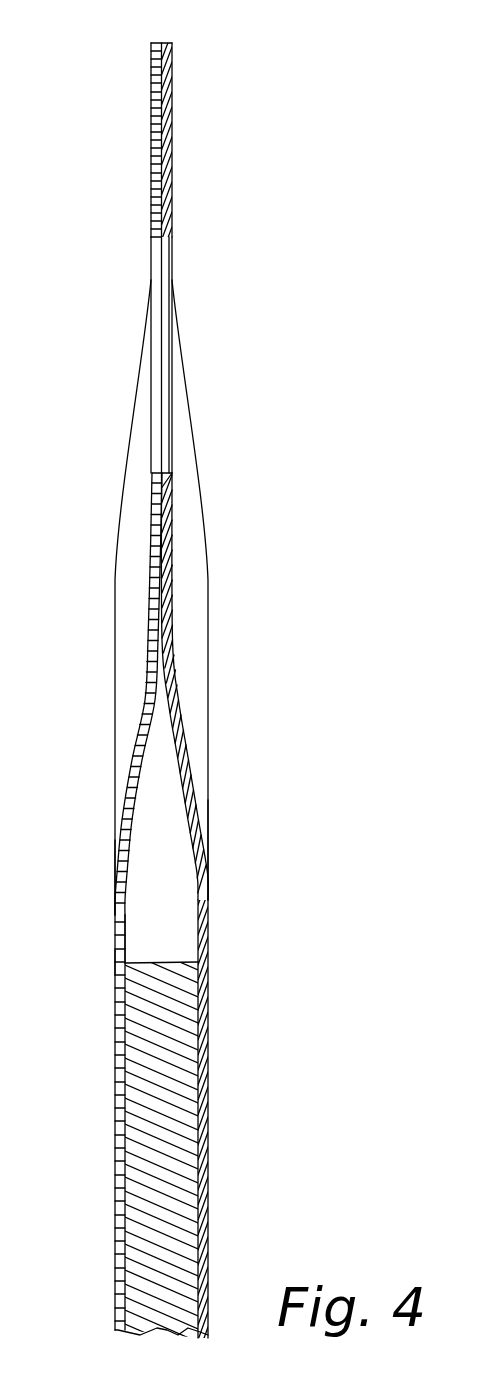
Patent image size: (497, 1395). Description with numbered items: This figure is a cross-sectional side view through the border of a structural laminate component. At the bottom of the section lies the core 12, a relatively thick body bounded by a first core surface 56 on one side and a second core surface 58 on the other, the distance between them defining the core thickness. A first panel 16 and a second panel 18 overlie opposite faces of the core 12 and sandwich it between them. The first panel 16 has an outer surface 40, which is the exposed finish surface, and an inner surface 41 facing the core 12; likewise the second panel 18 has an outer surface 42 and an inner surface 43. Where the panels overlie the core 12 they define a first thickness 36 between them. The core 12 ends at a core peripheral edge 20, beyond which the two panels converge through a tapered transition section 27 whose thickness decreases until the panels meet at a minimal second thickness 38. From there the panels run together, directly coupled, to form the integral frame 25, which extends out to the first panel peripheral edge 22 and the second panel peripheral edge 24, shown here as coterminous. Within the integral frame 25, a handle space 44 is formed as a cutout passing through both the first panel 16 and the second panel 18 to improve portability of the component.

The core 12 is at (158, 1162).
The first panel 16 is at (138, 768).
The second panel 18 is at (184, 760).
The core peripheral edge 20 is at (127, 963).
The first panel peripheral edge 22 is at (158, 43).
The second panel peripheral edge 24 is at (168, 43).
The integral frame 25 is at (156, 145).
The transition section 27 is at (190, 462).
The first thickness 36 is at (190, 963).
The second thickness 38 is at (154, 648).
The outer surface of first panel 40 is at (116, 853).
The inner surface of first panel 41 is at (127, 916).
The outer surface of second panel 42 is at (200, 830).
The inner surface of second panel 43 is at (178, 789).
The handle space 44 is at (163, 296).
The first core surface 56 is at (125, 1077).
The second core surface 58 is at (200, 1197).